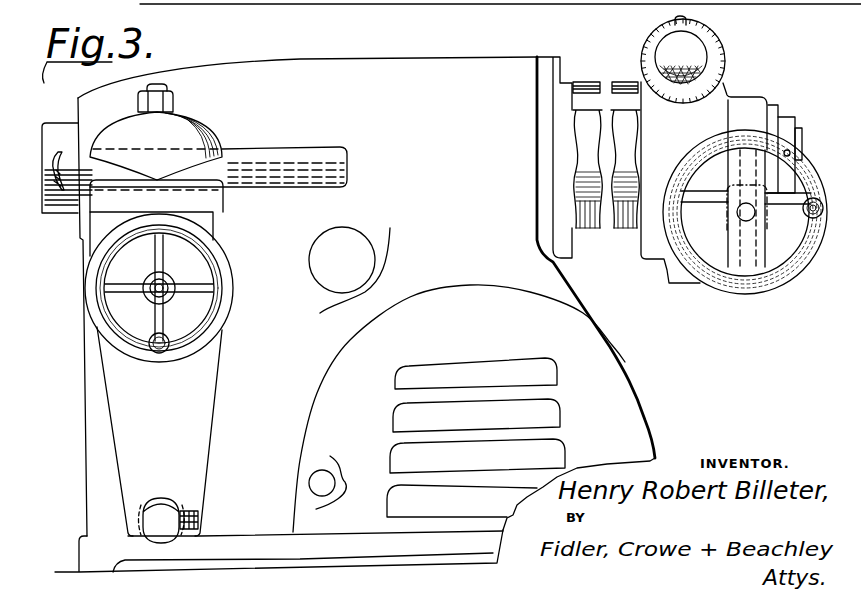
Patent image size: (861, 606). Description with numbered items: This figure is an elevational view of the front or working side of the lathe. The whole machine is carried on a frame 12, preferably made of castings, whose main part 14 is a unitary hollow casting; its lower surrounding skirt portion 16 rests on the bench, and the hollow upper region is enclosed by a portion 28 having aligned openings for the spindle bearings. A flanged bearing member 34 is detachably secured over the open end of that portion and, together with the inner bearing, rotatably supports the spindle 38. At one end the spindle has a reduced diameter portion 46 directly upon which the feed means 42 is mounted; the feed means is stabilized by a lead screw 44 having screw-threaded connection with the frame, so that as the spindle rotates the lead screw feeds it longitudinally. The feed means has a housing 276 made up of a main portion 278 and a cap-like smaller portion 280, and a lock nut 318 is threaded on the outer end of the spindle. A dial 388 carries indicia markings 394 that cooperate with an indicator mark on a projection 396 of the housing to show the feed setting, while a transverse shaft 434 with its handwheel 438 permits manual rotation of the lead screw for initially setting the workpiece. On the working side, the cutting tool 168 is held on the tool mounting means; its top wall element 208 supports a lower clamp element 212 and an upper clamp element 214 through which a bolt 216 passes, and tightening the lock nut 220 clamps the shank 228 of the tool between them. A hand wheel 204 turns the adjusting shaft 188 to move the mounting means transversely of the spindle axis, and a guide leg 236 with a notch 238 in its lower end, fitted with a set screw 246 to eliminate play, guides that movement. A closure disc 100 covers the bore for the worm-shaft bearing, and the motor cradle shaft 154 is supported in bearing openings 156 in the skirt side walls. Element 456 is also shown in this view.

The frame 12 is at (620, 341).
The main part 14 is at (588, 307).
The skirt portion 16 is at (607, 395).
The enclosing portion 28 is at (397, 69).
The flanged bearing member 34 is at (548, 68).
The spindle 38 is at (70, 213).
The feed means 42 is at (756, 310).
The lead screw 44 is at (590, 228).
The reduced diameter portion 46 is at (578, 124).
The closure disc 100 is at (347, 240).
The shaft 154 is at (312, 481).
The bearing openings 156 is at (358, 447).
The cutting tool 168 is at (286, 140).
The adjusting shaft 188 is at (167, 281).
The hand wheel 204 is at (230, 300).
The top wall element 208 is at (216, 218).
The lower clamp element 212 is at (214, 202).
The upper clamp element 214 is at (200, 117).
The bolt 216 is at (158, 85).
The lock nut 220 is at (174, 100).
The shank 228 is at (321, 152).
The guide leg 236 is at (190, 386).
The notch 238 is at (162, 496).
The set screw 246 is at (198, 527).
The housing 276 is at (756, 100).
The main portion 278 is at (749, 90).
The cap-like portion 280 is at (770, 107).
The lock nut 318 is at (781, 120).
The dial 388 is at (720, 58).
The indicia markings 394 is at (704, 50).
The projection 396 is at (688, 18).
The shaft 434 is at (752, 216).
The handwheel 438 is at (730, 284).
The shim plate 456 is at (603, 82).